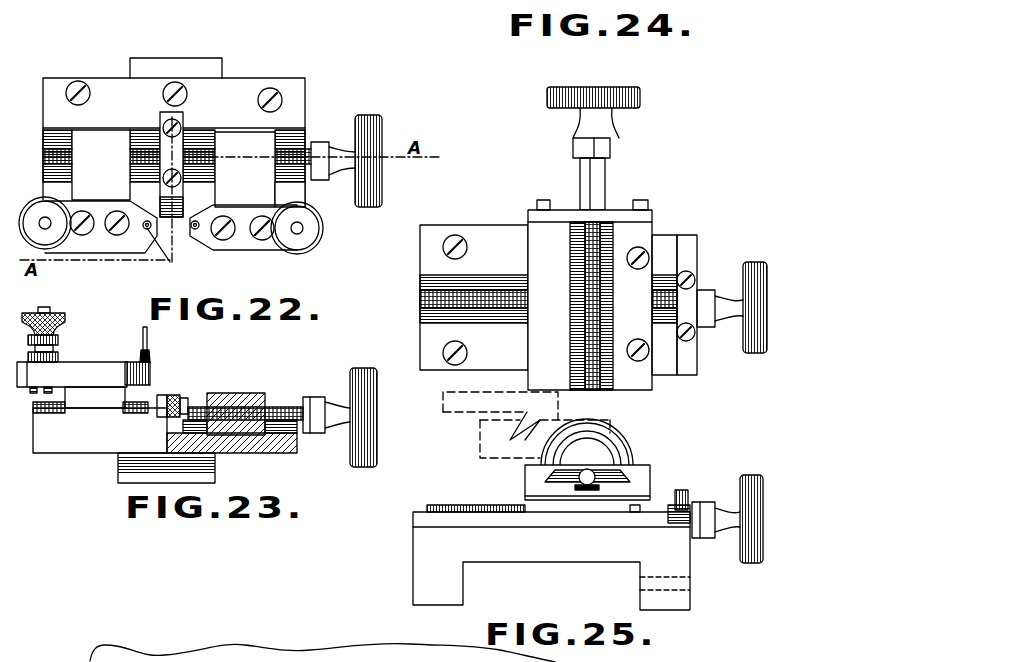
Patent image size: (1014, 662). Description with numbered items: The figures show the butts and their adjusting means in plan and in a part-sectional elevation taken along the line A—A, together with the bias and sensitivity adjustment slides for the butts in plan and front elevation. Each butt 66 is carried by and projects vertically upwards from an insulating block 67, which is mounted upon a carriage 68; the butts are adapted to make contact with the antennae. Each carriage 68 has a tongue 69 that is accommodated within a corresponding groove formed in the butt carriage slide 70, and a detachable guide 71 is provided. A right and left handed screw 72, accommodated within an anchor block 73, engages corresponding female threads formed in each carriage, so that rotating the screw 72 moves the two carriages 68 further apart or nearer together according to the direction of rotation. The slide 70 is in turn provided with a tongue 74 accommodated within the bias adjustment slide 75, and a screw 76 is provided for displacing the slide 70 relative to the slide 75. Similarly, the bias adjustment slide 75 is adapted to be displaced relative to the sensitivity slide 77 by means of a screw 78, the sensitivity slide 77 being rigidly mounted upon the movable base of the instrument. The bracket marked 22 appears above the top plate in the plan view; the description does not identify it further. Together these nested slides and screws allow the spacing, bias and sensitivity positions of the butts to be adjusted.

In FIG. 22, the bracket 22 is at (176, 59).
In FIG. 22, the butt 66 is at (195, 230).
In FIG. 22, the insulating block 67 is at (273, 244).
In FIG. 23, the insulating block 67 is at (90, 375).
In FIG. 22, the carriage 68 is at (98, 178).
In FIG. 23, the tongue 69 is at (118, 400).
In FIG. 25, the tongue 69 is at (443, 400).
In FIG. 22, the butt carriage slide 70 is at (293, 196).
In FIG. 23, the butt carriage slide 70 is at (294, 453).
In FIG. 25, the butt carriage slide 70 is at (495, 442).
In FIG. 22, the detachable guide 71 is at (238, 103).
In FIG. 25, the detachable guide 71 is at (613, 428).
In FIG. 22, the right and left handed screw 72 is at (318, 155).
In FIG. 23, the right and left handed screw 72 is at (275, 406).
In FIG. 22, the anchor block 73 is at (176, 117).
In FIG. 23, the anchor block 73 is at (160, 397).
In FIG. 23, the tongue 74 is at (208, 480).
In FIG. 25, the tongue 74 is at (617, 462).
In FIG. 24, the bias adjustment slide 75 is at (538, 232).
In FIG. 25, the bias adjustment slide 75 is at (540, 477).
In FIG. 24, the screw 76 is at (595, 174).
In FIG. 24, the sensitivity slide 77 is at (435, 255).
In FIG. 25, the sensitivity slide 77 is at (433, 556).
In FIG. 24, the screw 78 is at (420, 300).